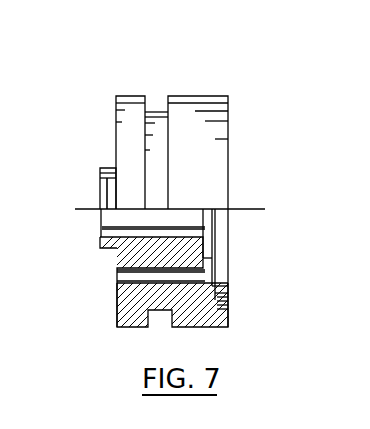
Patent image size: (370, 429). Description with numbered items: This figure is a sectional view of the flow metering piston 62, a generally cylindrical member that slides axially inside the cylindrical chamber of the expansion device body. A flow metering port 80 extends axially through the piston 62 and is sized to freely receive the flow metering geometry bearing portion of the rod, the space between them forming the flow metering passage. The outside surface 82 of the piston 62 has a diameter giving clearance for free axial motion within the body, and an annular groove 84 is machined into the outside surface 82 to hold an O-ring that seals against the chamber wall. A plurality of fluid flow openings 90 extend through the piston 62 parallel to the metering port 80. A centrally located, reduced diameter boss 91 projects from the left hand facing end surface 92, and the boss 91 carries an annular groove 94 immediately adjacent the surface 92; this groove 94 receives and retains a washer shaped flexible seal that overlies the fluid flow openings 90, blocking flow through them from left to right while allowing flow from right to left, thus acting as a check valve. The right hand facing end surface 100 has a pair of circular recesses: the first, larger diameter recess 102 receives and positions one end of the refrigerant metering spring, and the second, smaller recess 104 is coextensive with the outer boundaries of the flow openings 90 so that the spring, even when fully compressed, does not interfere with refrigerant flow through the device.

The flow metering piston 62 is at (264, 142).
The flow metering port 80 is at (102, 228).
The outside surface 82 is at (212, 96).
The annular groove 84 is at (147, 98).
The fluid flow openings 90 is at (118, 276).
The boss 91 is at (100, 169).
The left hand facing end surface 92 is at (117, 314).
The annular groove 94 is at (111, 178).
The right hand facing end surface 100 is at (230, 313).
The first recess 102 is at (216, 296).
The second recess 104 is at (215, 277).